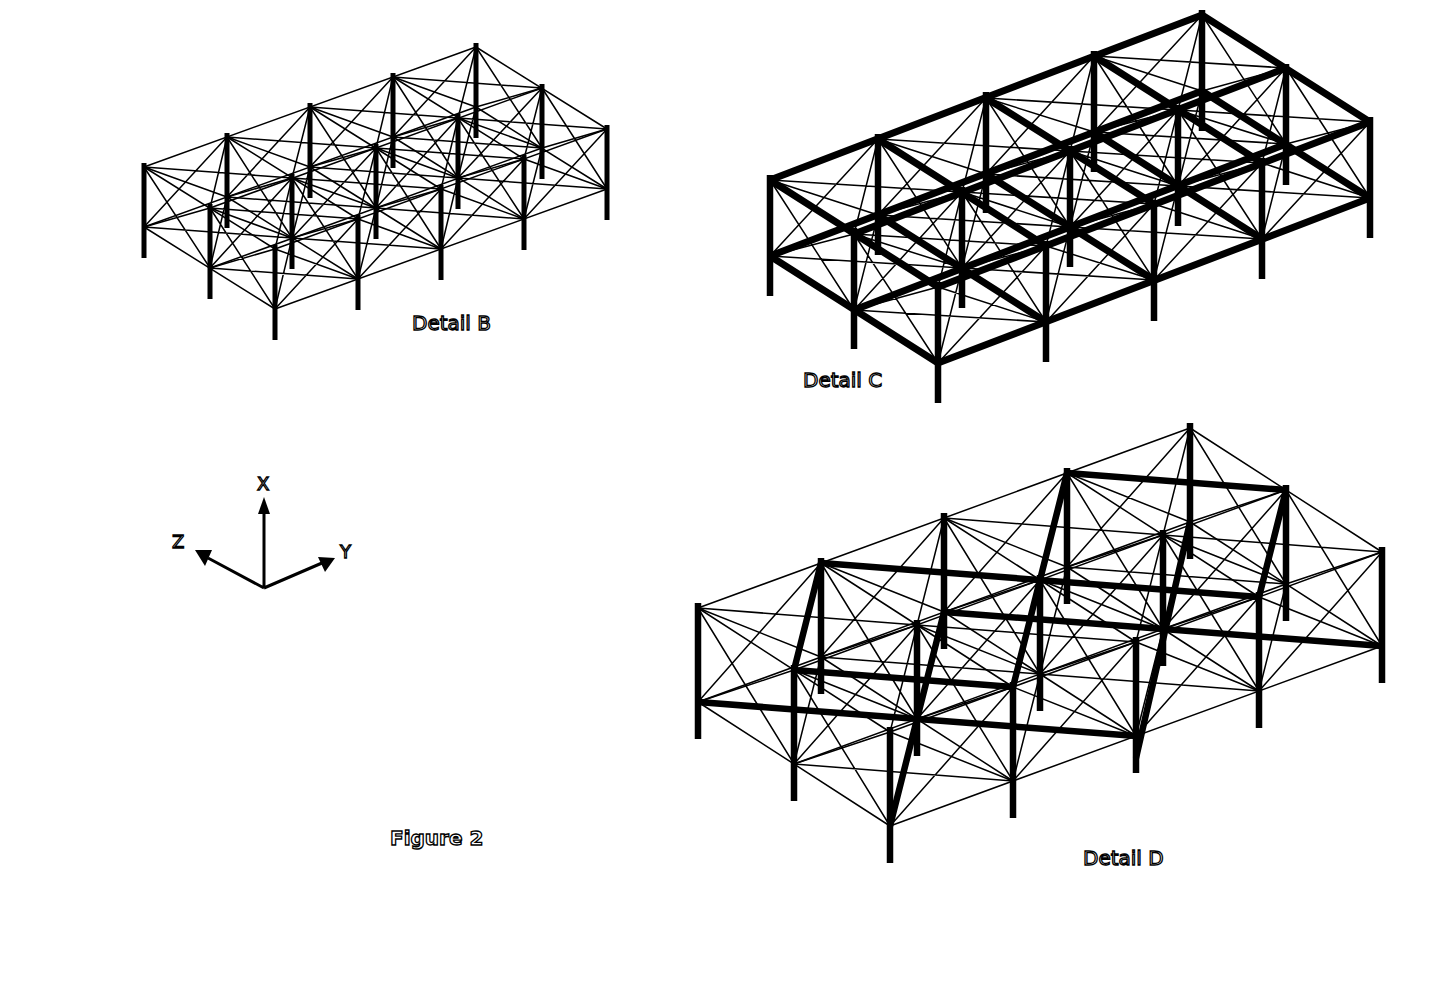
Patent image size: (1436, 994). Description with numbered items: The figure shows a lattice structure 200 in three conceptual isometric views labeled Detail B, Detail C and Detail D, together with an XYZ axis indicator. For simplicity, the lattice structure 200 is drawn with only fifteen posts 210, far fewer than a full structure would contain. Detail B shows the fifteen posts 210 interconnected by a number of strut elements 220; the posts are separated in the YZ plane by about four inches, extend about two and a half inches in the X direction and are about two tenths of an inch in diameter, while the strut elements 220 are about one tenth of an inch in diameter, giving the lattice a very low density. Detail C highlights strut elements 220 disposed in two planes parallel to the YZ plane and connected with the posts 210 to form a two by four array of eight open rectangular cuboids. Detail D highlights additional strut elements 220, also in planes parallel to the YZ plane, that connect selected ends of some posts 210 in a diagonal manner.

The lattice structure 200 is at (592, 85).
The posts 210 is at (524, 192).
The strut elements 220 is at (333, 270).